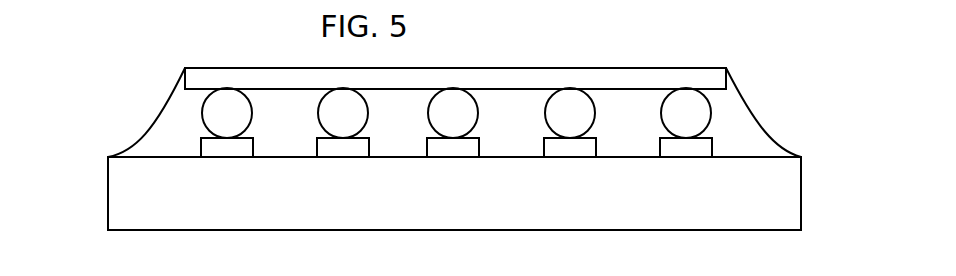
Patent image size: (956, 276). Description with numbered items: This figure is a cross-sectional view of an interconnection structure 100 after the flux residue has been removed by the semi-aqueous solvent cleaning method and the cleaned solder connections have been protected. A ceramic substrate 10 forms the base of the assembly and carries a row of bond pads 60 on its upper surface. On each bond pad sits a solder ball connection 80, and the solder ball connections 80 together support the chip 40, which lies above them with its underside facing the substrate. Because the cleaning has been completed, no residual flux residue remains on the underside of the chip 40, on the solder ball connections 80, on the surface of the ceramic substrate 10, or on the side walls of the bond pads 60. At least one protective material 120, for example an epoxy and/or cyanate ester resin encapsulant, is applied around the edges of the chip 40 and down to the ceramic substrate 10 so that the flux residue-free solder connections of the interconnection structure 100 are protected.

The interconnection structure 100 is at (123, 92).
The ceramic substrate 10 is at (789, 182).
The chip 40 is at (553, 77).
The protective material 120 is at (737, 123).
The solder ball connection 80 is at (228, 108).
The bond pads 60 is at (688, 148).